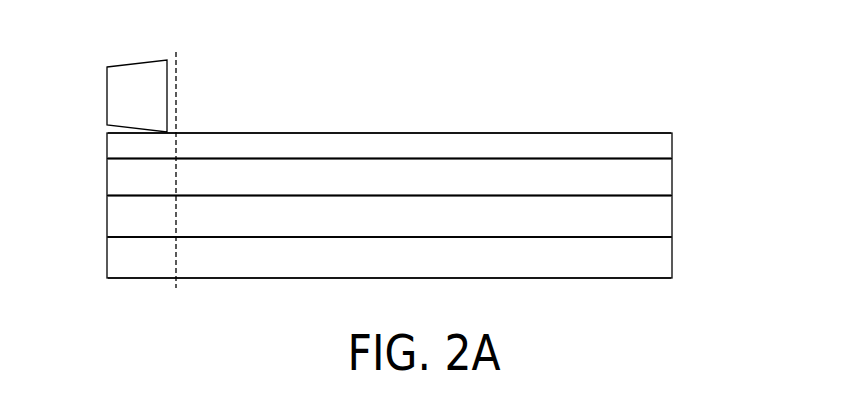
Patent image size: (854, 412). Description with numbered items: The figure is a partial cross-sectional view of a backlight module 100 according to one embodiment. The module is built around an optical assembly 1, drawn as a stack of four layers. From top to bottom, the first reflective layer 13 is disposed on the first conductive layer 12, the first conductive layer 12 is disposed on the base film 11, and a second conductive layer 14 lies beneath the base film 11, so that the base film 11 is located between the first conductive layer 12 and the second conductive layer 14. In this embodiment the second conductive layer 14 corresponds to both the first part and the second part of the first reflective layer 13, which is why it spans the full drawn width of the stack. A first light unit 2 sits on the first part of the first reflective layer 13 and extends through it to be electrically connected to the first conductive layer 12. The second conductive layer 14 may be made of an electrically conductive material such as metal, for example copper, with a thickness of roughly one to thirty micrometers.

The display device 100 is at (720, 43).
The optical assembly 1 is at (100, 140).
The first light unit 2 is at (107, 103).
The base film 11 is at (673, 212).
The first conductive layer 12 is at (673, 182).
The first reflective layer 13 is at (673, 148).
The second conductive layer 14 is at (673, 255).